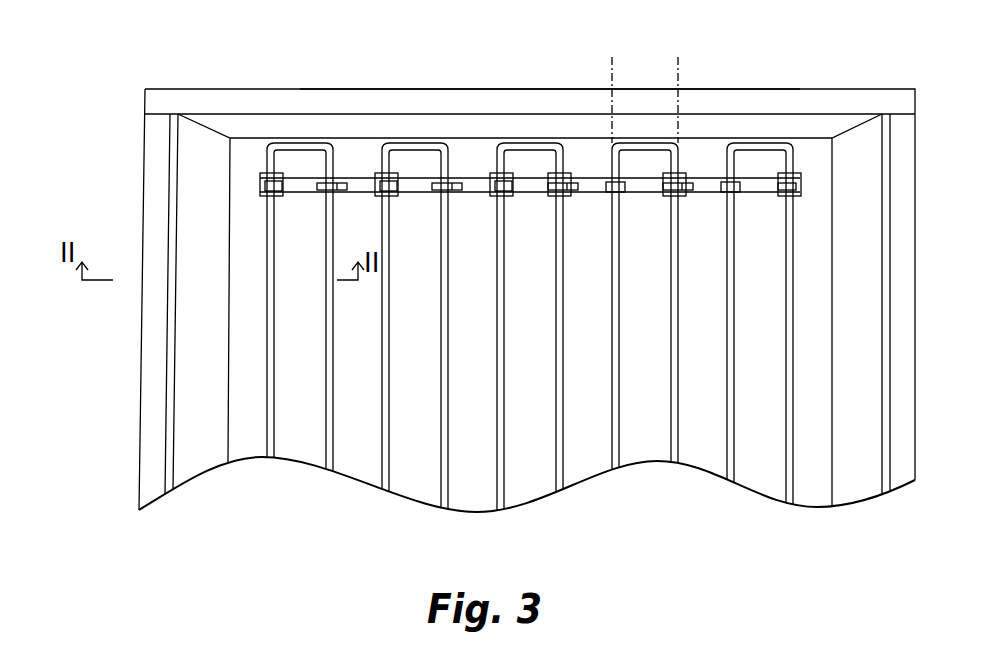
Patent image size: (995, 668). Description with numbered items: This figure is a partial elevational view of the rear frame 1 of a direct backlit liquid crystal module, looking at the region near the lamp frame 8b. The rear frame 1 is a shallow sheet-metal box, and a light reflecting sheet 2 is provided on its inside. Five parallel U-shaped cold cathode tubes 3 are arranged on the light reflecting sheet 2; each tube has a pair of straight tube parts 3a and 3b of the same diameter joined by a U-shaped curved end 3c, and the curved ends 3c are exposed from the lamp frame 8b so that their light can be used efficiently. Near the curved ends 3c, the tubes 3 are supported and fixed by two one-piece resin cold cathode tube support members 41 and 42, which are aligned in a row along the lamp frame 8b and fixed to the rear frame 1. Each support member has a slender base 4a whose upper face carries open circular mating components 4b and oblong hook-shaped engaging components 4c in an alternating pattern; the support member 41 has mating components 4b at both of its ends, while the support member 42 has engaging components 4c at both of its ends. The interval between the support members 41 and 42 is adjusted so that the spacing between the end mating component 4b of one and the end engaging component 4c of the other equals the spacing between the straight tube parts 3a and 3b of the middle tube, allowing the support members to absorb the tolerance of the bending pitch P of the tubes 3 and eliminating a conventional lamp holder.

The rear frame 1 is at (143, 252).
The light reflecting sheet 2 is at (200, 310).
The U-shaped cold cathode tube 3 is at (532, 285).
The first straight tube portion 3a is at (266, 418).
The second straight tube portion 3b is at (324, 418).
The U-shaped curved end 3c is at (300, 143).
The slender base 4a is at (530, 122).
The cold cathode tube support member 41 is at (357, 178).
The cold cathode tube support member 42 is at (703, 178).
The open circular mating component 4b is at (259, 183).
The oblong hook-shaped engaging component 4c is at (312, 190).
The lamp frame 8b is at (558, 97).
The bending pitch P is at (668, 74).